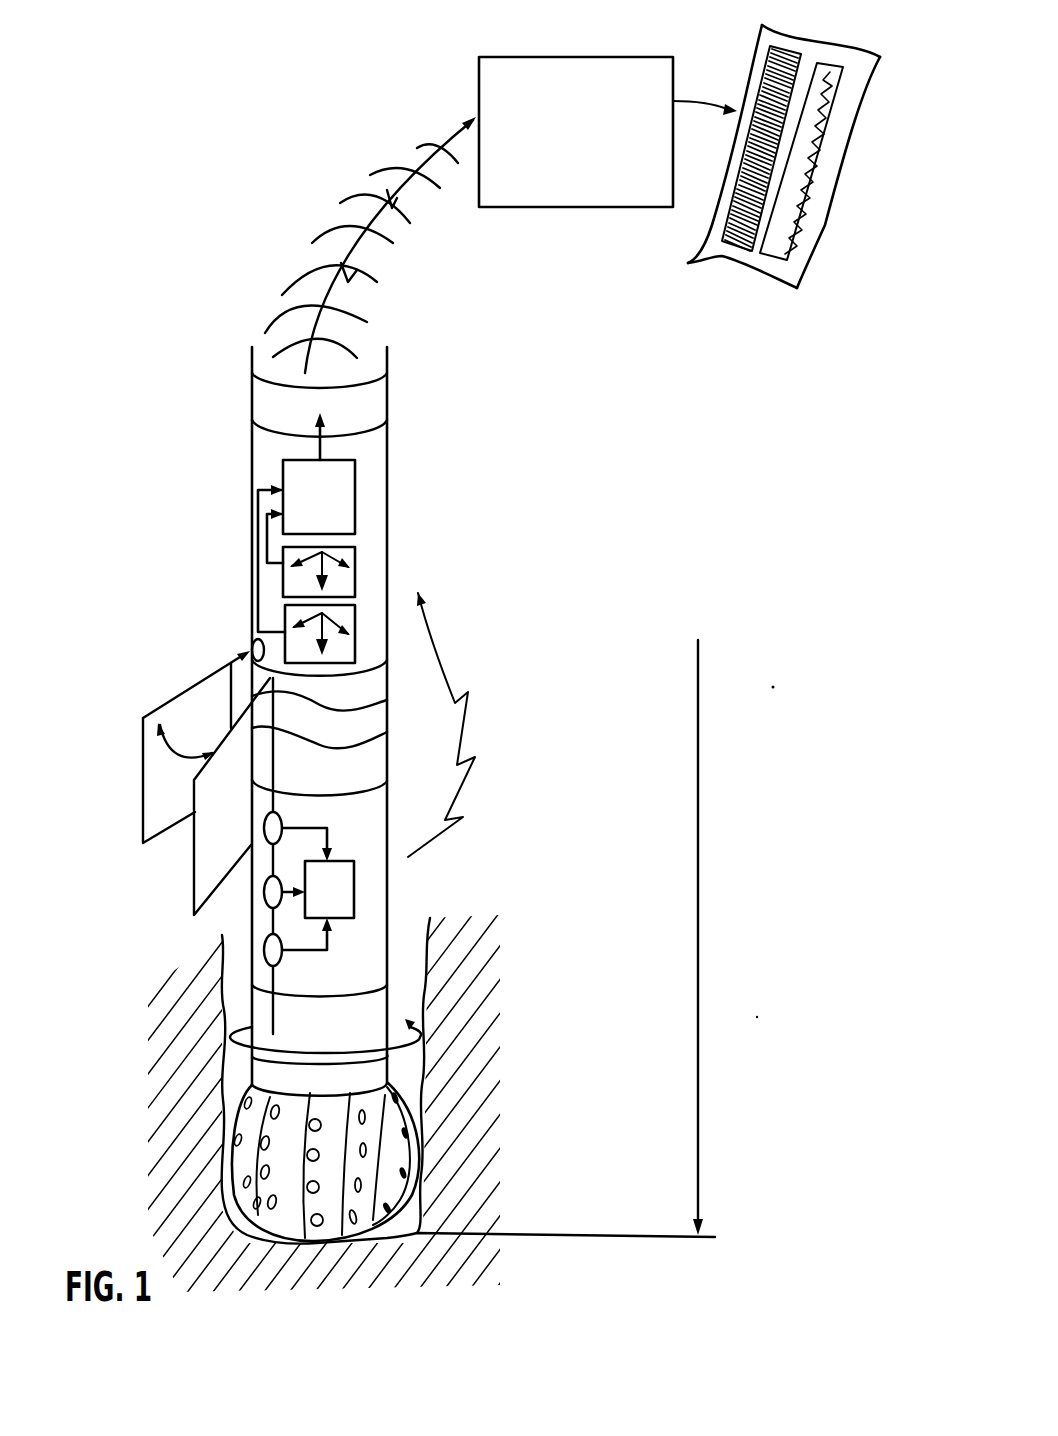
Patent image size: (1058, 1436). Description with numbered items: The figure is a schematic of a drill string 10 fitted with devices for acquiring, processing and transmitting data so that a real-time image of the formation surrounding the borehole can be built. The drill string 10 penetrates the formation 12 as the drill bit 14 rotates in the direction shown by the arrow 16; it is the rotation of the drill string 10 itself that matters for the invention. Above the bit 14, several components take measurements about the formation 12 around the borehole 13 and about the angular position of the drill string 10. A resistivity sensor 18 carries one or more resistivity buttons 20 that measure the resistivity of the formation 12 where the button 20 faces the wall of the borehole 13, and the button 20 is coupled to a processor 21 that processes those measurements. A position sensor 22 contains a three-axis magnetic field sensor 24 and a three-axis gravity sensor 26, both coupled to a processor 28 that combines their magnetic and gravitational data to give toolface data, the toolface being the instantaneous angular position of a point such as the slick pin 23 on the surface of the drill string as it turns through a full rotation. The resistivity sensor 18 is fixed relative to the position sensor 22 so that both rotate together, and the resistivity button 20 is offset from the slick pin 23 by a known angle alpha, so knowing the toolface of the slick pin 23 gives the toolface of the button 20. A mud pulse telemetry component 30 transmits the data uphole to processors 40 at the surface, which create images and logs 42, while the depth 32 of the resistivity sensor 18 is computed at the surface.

The drill string 10 is at (141, 632).
The formation 12 is at (420, 1071).
The borehole 13 is at (408, 1078).
The drill bit 14 is at (345, 1172).
The arrow 16 is at (420, 1040).
The resistivity sensor 18 is at (375, 960).
The resistivity button 20 is at (262, 899).
The processor 21 is at (348, 900).
The position sensor 22 is at (261, 467).
The slick pin 23 is at (252, 643).
The magnetic field sensor 24 is at (345, 650).
The gravity sensor 26 is at (348, 582).
The processor 28 is at (345, 490).
The mud pulse telemetry component 30 is at (366, 405).
The depth 32 is at (700, 1004).
The processors 40 is at (537, 68).
The logs 42 is at (716, 252).